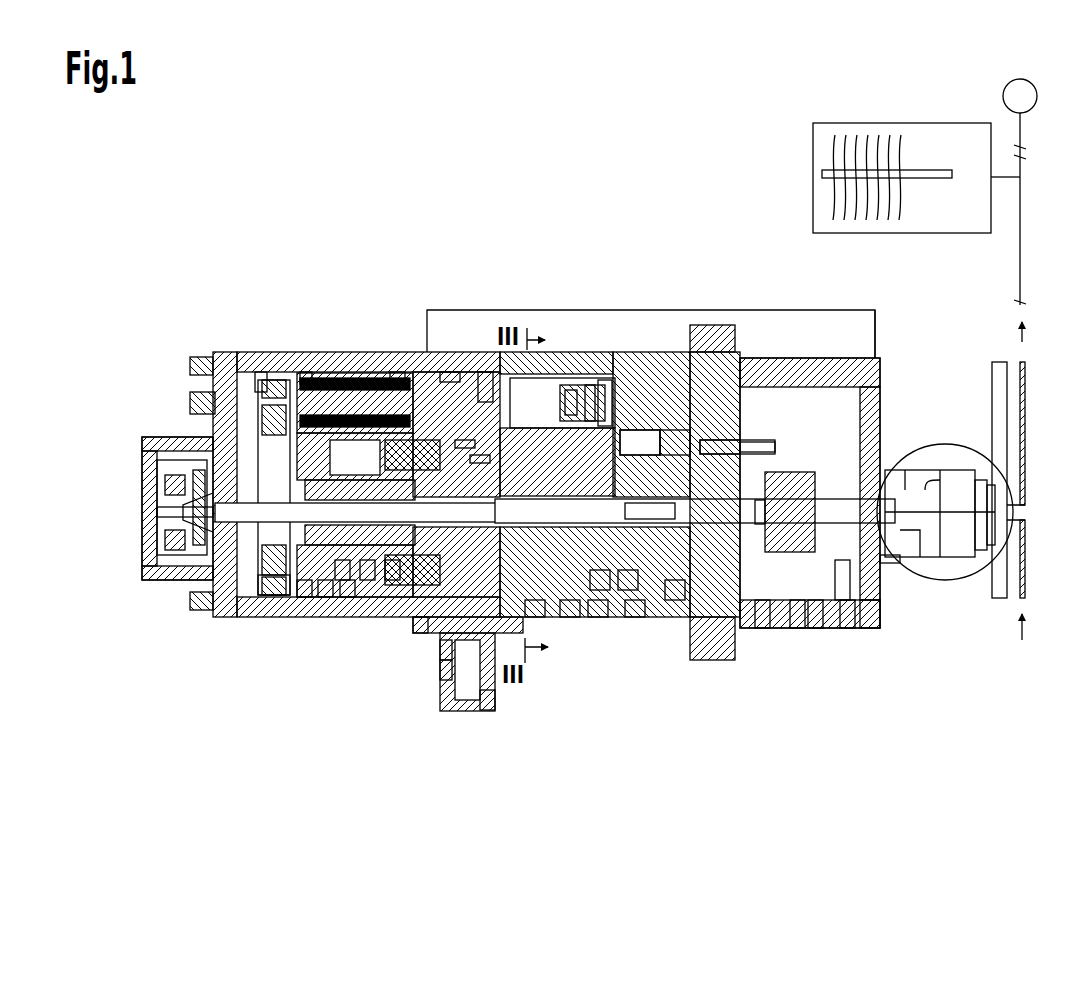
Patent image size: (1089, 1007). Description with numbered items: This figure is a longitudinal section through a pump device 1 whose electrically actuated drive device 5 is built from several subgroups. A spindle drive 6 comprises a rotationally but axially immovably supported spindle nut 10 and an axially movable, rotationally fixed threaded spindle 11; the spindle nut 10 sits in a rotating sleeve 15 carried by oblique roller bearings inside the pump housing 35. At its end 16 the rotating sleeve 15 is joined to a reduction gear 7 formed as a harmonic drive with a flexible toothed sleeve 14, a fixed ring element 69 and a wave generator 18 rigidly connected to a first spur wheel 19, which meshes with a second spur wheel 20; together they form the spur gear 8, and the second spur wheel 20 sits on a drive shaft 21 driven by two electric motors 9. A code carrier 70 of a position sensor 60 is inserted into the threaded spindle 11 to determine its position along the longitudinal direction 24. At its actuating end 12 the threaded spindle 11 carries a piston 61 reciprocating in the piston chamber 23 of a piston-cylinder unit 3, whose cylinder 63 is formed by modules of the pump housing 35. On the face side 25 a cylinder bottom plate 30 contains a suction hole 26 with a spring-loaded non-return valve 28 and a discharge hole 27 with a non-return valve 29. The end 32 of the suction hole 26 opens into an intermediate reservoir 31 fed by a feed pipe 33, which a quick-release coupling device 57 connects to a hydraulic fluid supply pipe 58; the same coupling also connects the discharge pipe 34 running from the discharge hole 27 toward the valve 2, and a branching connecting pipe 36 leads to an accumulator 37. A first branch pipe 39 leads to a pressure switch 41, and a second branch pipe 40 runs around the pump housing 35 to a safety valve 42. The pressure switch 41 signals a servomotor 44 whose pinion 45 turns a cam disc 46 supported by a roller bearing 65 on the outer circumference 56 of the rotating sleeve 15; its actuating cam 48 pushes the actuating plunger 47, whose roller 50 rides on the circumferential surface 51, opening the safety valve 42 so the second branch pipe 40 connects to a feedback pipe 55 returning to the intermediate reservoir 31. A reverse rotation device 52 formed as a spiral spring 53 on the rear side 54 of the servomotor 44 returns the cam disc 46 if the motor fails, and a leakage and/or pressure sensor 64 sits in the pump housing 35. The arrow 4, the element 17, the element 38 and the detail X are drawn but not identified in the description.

The pump device 1 is at (518, 183).
The valve 2 is at (1038, 96).
The piston-cylinder unit 3 is at (646, 352).
The workpiece 4 is at (1025, 628).
The drive device 5 is at (375, 617).
The spindle drive 6 is at (552, 617).
The reduction gear 7 is at (342, 617).
The spur gear 8 is at (262, 352).
The electric motors 9 is at (335, 352).
The spindle nut 10 is at (420, 352).
The threaded spindle 11 is at (600, 617).
The actuating end 12 is at (625, 617).
The flexible toothed sleeve 14 is at (345, 617).
The rotating sleeve 15 is at (392, 617).
The end 16 is at (396, 352).
The drive shaft 17 is at (425, 640).
The wave generator 18 is at (330, 617).
The first spur wheel 19 is at (255, 598).
The second spur wheel 20 is at (248, 352).
The drive shaft 21 is at (305, 352).
The piston chamber 23 is at (758, 630).
The longitudinal direction 24 is at (675, 617).
The face side 25 is at (810, 628).
The suction hole 26 is at (845, 628).
The discharge hole 27 is at (810, 472).
The non-return valve 28 is at (800, 628).
The non-return valve 29 is at (756, 358).
The cylinder bottom plate 30 is at (870, 628).
The intermediate reservoir 31 is at (826, 358).
The end 32 is at (845, 628).
The feed pipe 33 is at (880, 570).
The discharge pipe 34 is at (885, 465).
The pump housing 35 is at (589, 352).
The branching connecting pipe 36 is at (1022, 180).
The accumulator 37 is at (808, 128).
The spring 38 is at (868, 125).
The first branch pipe 39 is at (787, 358).
The second branch pipe 40 is at (878, 336).
The pressure switch 41 is at (640, 352).
The safety valve 42 is at (458, 728).
The servomotor 44 is at (562, 352).
The pinion 45 is at (487, 352).
The cam disc 46 is at (463, 352).
The actuating plunger 47 is at (492, 712).
The actuating cam 48 is at (475, 352).
The roller 50 is at (535, 617).
The circumferential surface 51 is at (430, 650).
The reverse rotation device 52 is at (602, 352).
The wound or spiral spring 53 is at (573, 352).
The rear side 54 is at (593, 617).
The feedback pipe 55 is at (572, 617).
The outer circumference 56 is at (413, 625).
The quick-release coupling device 57 is at (948, 560).
The hydraulic fluid supply pipe 58 is at (1027, 568).
The position sensor 60 is at (141, 543).
The piston 61 is at (735, 655).
The cylinder 63 is at (672, 352).
The leakage and/or pressure sensor 64 is at (632, 617).
The roller bearing 65 is at (445, 352).
The fixed ring element 69 is at (305, 617).
The code carrier 70 is at (365, 617).
The detail X is at (940, 582).